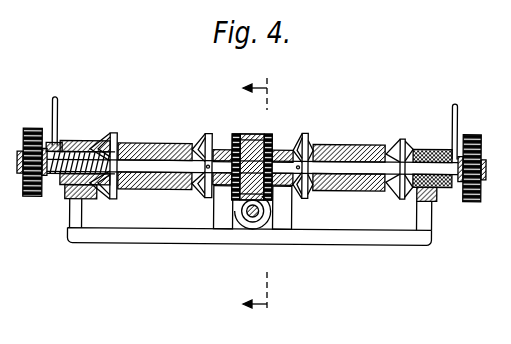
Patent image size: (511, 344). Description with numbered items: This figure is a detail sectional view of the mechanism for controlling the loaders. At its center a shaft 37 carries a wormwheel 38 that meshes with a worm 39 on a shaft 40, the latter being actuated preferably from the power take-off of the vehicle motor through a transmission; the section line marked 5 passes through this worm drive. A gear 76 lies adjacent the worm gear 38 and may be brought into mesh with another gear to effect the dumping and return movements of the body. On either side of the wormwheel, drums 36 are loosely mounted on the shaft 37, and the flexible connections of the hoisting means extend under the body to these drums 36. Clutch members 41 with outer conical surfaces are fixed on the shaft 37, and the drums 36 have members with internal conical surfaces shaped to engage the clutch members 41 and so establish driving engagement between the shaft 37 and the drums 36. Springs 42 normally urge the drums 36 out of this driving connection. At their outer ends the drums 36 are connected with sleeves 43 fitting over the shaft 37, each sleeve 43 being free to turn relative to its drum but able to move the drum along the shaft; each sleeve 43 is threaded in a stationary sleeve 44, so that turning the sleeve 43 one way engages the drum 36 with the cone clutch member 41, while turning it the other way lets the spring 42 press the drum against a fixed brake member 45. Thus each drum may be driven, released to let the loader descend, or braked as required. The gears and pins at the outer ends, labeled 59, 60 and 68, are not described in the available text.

The section line 5- 5 is at (262, 196).
The drum 36 is at (166, 145).
The shaft 37 is at (362, 168).
The wormwheel 38 is at (253, 140).
The worm 39 is at (268, 213).
The shaft 40 is at (252, 215).
The clutch member 41 is at (299, 137).
The spring 42 is at (309, 195).
The sleeve 43 is at (428, 148).
The stationary sleeve 44 is at (438, 196).
The fixed brake member 45 is at (398, 142).
The gear 59 is at (23, 156).
The lever pin 60 is at (31, 121).
The lever 68 is at (8, 11).
The gear 76 is at (233, 137).